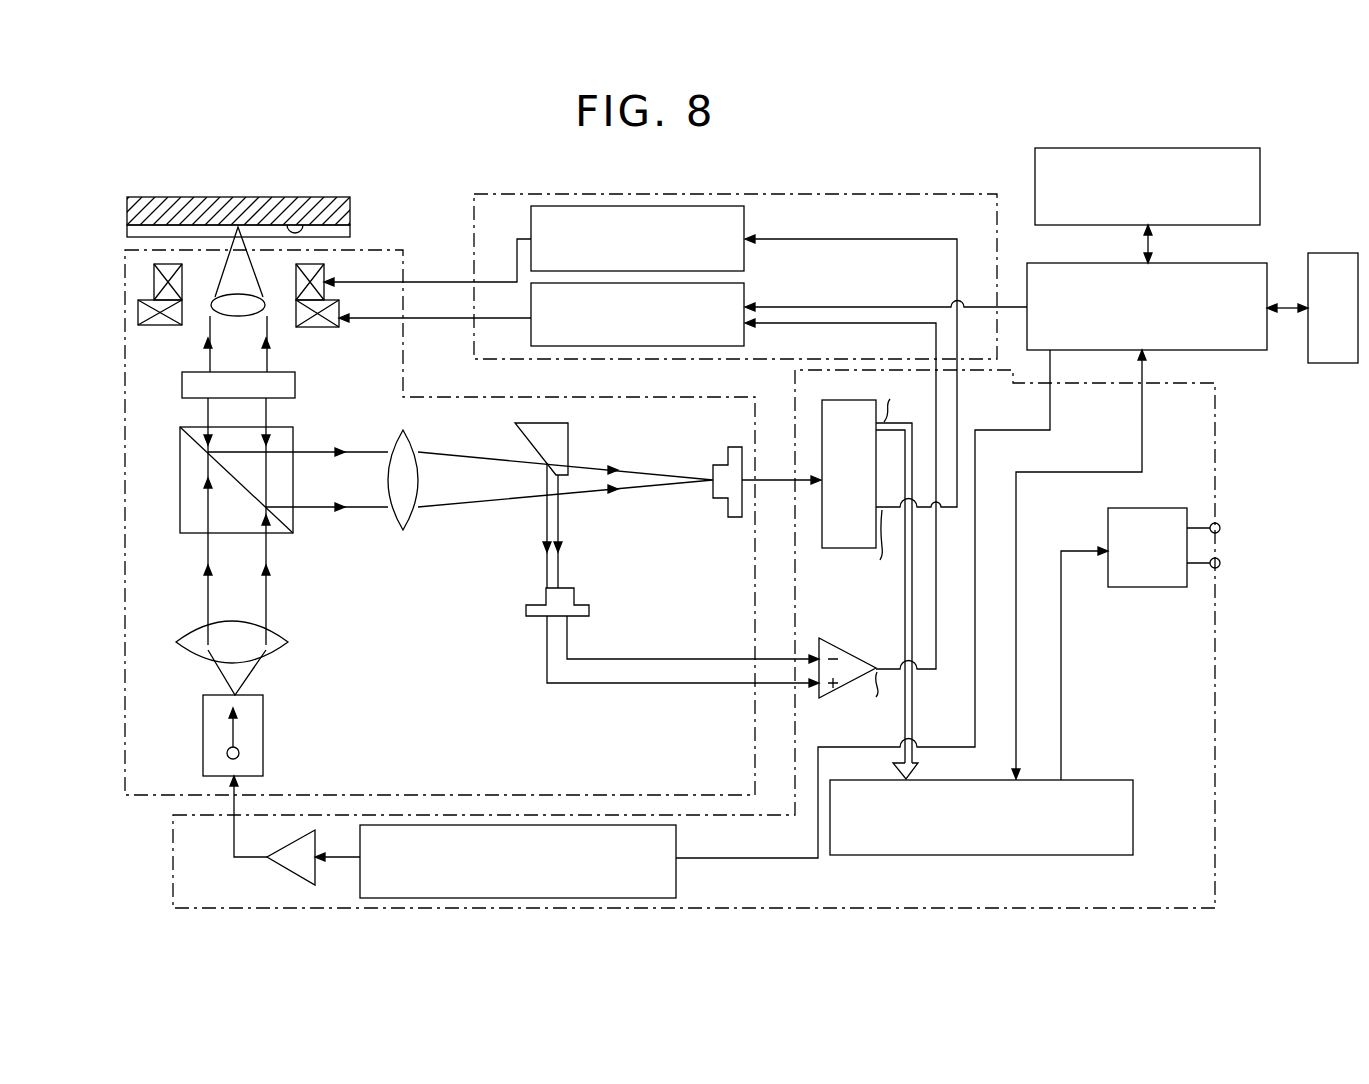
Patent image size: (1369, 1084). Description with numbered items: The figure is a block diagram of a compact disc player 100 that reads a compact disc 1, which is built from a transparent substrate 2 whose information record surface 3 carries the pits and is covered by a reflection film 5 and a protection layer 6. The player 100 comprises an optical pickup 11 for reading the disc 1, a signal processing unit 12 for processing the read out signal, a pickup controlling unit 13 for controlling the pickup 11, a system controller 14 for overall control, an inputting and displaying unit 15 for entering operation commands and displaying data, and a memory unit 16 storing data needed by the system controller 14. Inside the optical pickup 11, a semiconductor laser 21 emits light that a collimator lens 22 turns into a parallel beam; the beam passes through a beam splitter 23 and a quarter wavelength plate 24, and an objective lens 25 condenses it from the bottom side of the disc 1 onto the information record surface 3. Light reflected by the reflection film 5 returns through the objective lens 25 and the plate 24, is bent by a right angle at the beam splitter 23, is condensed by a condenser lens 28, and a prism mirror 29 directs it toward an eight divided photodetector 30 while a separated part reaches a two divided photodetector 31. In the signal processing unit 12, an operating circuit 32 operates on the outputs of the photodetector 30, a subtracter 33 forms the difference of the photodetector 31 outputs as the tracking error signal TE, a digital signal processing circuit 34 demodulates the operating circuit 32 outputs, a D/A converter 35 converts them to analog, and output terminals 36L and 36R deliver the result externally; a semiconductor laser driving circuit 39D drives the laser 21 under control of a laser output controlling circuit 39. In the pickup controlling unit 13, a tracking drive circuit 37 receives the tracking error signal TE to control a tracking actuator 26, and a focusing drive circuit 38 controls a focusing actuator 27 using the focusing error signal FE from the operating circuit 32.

The compact disc 1 is at (168, 190).
The transparent substrate 2 is at (351, 233).
The information record surface 3 is at (300, 229).
The reflection film 5 is at (351, 222).
The protection layer 6 is at (231, 197).
The optical pickup 11 is at (404, 367).
The signal processing unit 12 is at (1216, 800).
The pickup controlling unit 13 is at (673, 194).
The system controller 14 is at (1045, 263).
The inputting and displaying unit 15 is at (1035, 156).
The memory unit 16 is at (1330, 253).
The semiconductor laser 21 is at (264, 740).
The collimator lens 22 is at (289, 634).
The beam splitter 23 is at (181, 476).
The ¼ wavelength plate 24 is at (182, 392).
The objective lens 25 is at (258, 312).
The tracking actuator 26 is at (152, 326).
The focusing actuator 27 is at (183, 292).
The condenser lens 28 is at (403, 531).
The prism mirror 29 is at (569, 437).
The eight divided photodetector 30 is at (720, 465).
The two divided photodetector 31 is at (526, 610).
The operating circuit 32 is at (831, 549).
The subtracter 33 is at (848, 653).
The digital signal processing circuit 34 is at (1117, 779).
The D/A converter 35 is at (1108, 526).
The output terminal 36L is at (1222, 523).
The output terminal 36R is at (1219, 568).
The tracking drive circuit 37 is at (748, 292).
The focusing drive circuit 38 is at (748, 220).
The laser output controlling circuit 39 is at (680, 838).
The semiconductor laser driving circuit 39D is at (292, 872).
The compact disc player 100 is at (447, 228).